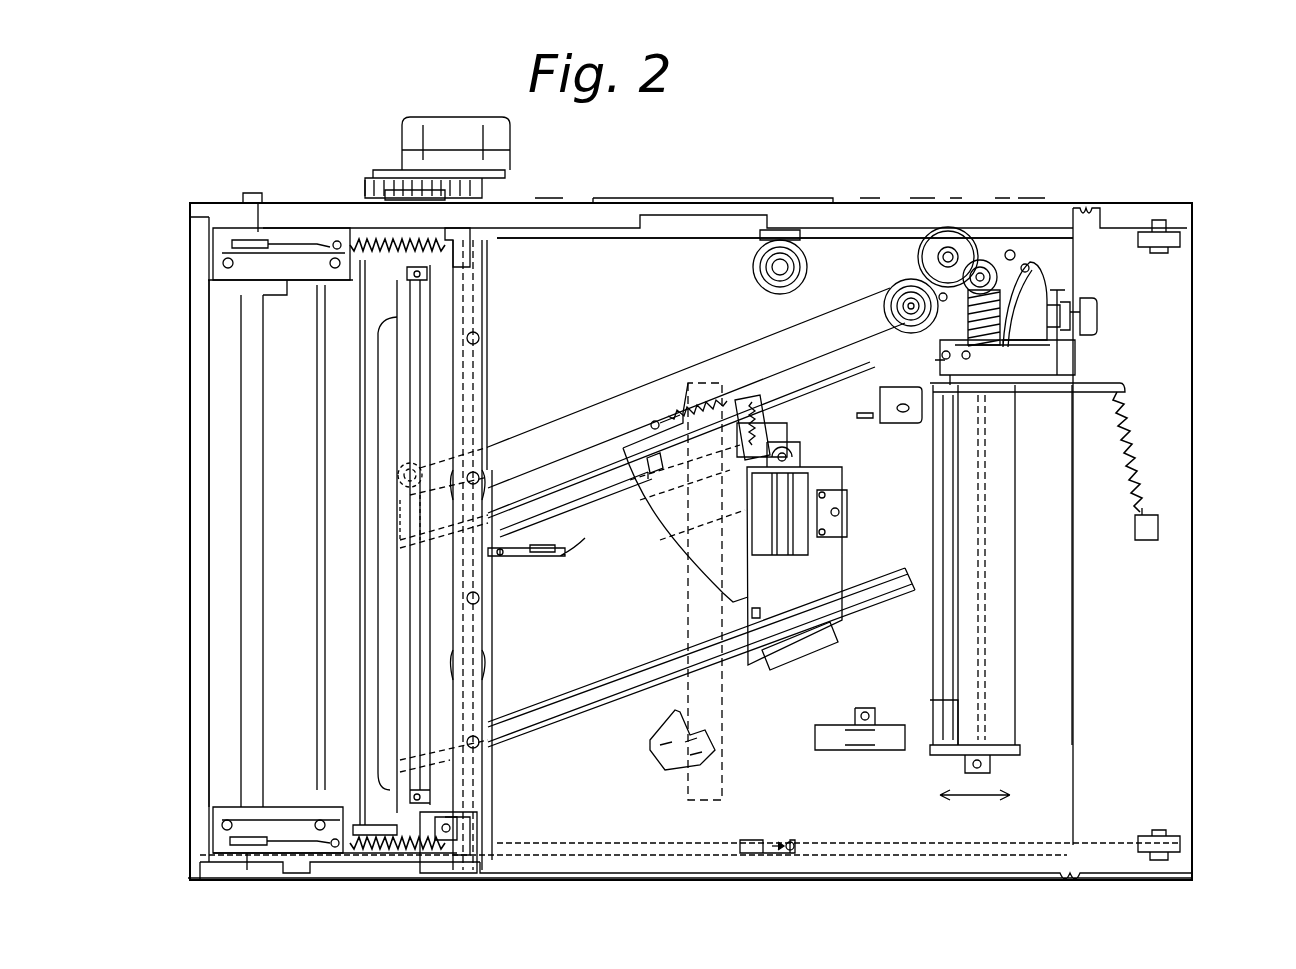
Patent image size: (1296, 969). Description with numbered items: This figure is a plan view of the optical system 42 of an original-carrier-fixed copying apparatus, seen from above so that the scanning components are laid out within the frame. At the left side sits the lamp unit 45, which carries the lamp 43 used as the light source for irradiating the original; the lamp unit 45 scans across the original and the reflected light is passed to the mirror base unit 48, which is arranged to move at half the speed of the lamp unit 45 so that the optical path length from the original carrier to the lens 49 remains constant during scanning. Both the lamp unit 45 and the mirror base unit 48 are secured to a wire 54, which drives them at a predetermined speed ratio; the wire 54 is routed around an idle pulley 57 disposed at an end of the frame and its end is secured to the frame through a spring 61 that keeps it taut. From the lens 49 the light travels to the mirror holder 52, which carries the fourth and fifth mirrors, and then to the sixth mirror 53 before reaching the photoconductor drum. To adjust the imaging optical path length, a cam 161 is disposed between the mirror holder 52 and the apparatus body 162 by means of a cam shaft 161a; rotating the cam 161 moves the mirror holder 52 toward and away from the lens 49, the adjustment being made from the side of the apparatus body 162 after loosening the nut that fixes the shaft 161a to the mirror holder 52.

The optical system 42 is at (773, 163).
The lamp 43 is at (487, 867).
The lamp unit 45 is at (498, 793).
The mirror base unit 48 is at (222, 527).
The lens 49 is at (785, 565).
The mirror holder 52 is at (882, 300).
The sixth mirror 53 is at (672, 377).
The wire 54 is at (568, 235).
The idle pulley 57 is at (1178, 253).
The spring 61 is at (373, 242).
The cam 161 is at (1043, 272).
The cam shaft 161a is at (1095, 315).
The apparatus body 162 is at (1176, 388).